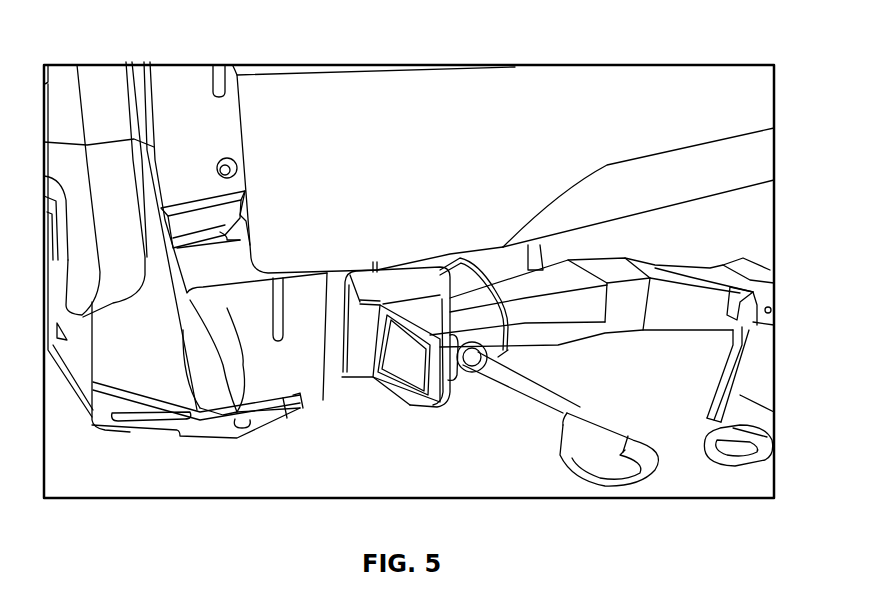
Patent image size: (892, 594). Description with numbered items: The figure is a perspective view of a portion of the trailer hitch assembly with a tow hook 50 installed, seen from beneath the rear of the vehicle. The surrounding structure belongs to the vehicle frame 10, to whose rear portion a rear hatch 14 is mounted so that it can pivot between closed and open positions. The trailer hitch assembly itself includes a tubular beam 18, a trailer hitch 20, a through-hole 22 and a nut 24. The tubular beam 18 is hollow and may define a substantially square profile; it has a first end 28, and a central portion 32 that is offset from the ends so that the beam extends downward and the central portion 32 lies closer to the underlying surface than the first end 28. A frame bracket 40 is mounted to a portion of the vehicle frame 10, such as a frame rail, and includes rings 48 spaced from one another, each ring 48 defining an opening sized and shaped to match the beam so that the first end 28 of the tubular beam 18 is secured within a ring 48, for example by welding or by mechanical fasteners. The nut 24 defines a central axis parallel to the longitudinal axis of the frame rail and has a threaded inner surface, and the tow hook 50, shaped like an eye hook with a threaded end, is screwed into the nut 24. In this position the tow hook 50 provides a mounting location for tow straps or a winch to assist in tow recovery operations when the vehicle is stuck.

The vehicle frame 10 is at (93, 419).
The rear hatch 14 is at (583, 100).
The tubular beam 18 is at (575, 328).
The trailer hitch 20 is at (730, 363).
The through-hole 22 is at (466, 372).
The nut 24 is at (482, 375).
The first end 28 is at (400, 385).
The central portion 32 is at (748, 270).
The frame bracket 40 is at (362, 352).
The ring 48 is at (445, 395).
The tow hook 50 is at (547, 413).